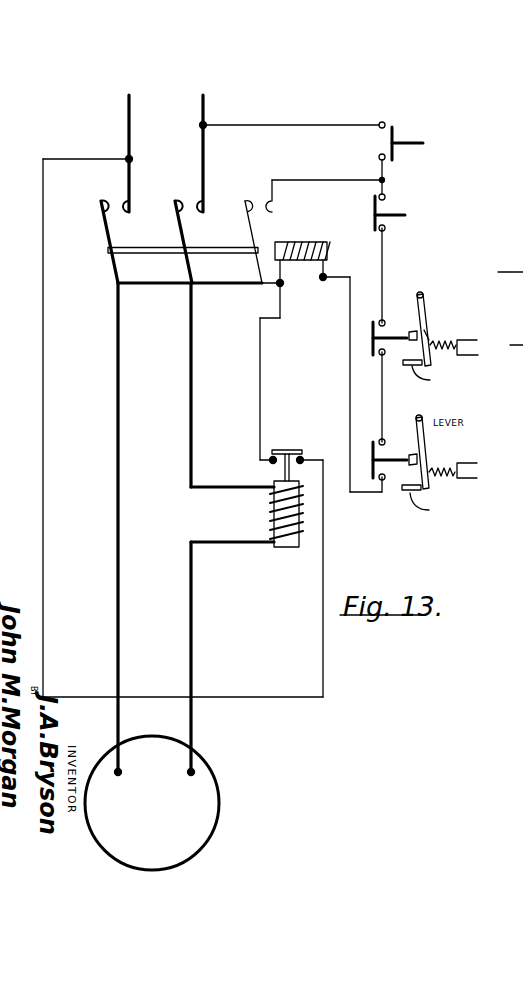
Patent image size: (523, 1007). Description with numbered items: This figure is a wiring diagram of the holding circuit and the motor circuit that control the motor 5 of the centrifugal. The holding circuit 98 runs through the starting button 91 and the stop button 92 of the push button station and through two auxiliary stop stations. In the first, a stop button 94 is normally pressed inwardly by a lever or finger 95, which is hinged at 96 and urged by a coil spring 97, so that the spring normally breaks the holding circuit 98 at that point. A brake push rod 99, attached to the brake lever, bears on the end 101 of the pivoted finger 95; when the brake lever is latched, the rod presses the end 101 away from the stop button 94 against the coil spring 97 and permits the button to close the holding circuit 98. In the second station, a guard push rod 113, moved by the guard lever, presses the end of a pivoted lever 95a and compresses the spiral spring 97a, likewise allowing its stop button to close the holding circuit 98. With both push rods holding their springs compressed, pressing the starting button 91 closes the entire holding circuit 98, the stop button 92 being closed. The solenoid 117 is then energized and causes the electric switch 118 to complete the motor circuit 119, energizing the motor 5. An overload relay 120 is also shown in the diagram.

The motor 5 is at (207, 822).
The starting button 91 is at (398, 142).
The stop button 92 is at (393, 208).
The stop button 94 is at (413, 331).
The lever or finger 95 is at (426, 336).
The pivoted lever or finger 95a is at (428, 483).
The hinge 96 is at (421, 292).
The coil spring 97 is at (453, 342).
The spiral spring 97a is at (448, 470).
The holding circuit 98 is at (43, 376).
The brake push rod 99 is at (409, 366).
The end of pivoted finger 101 is at (478, 355).
The guard push rod 113 is at (405, 492).
The solenoid 117 is at (327, 252).
The electric switch 118 is at (236, 252).
The motor circuit 119 is at (118, 455).
The overload relay 120 is at (287, 548).